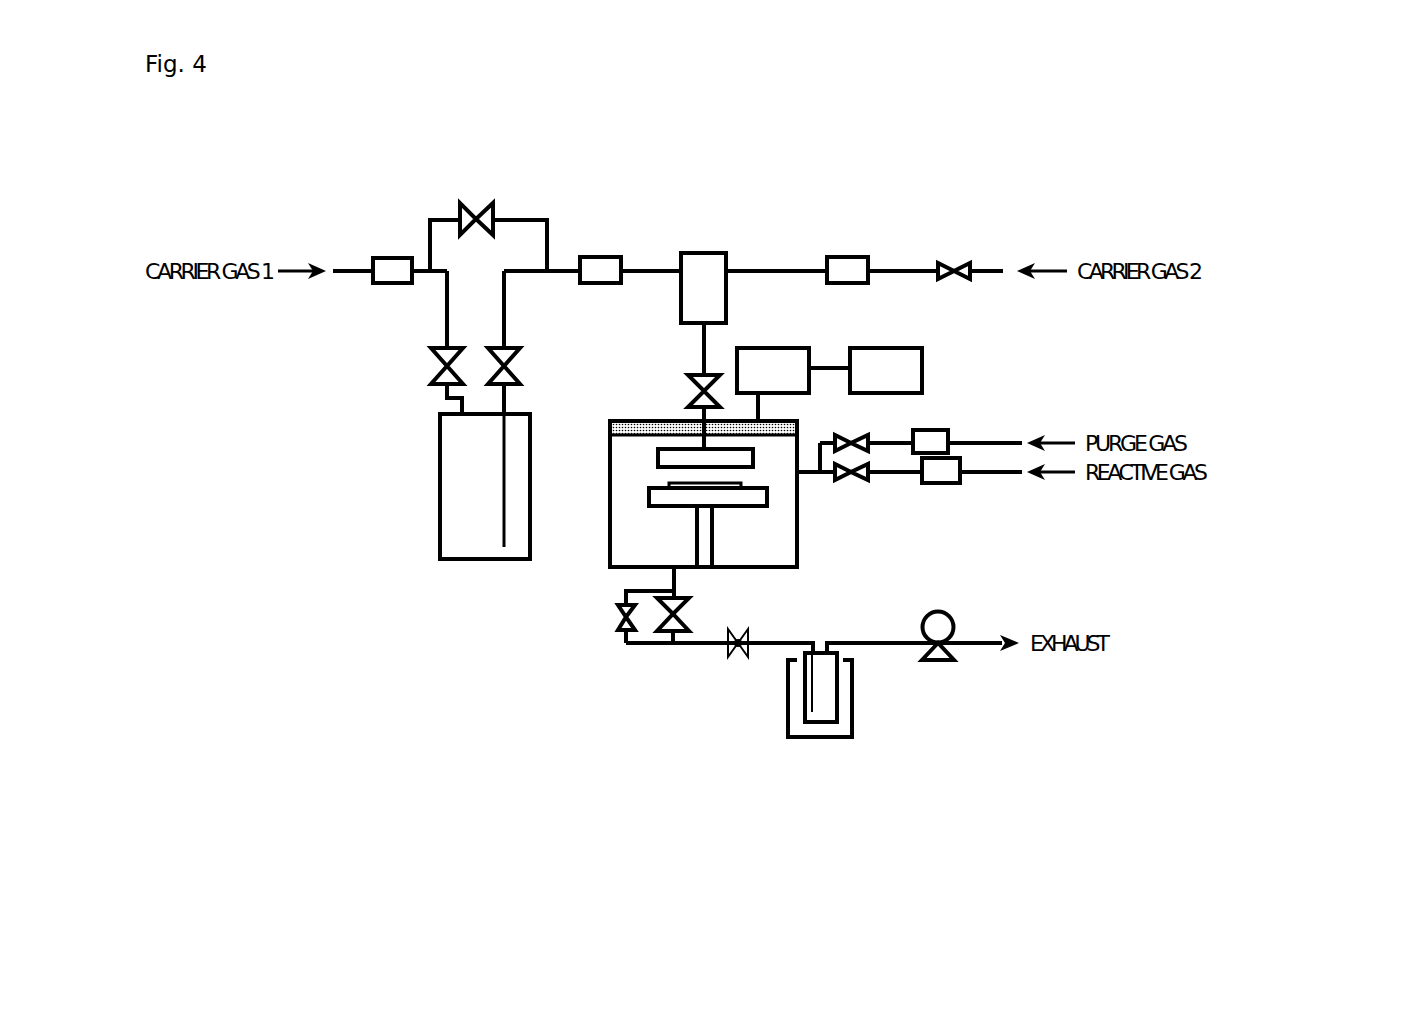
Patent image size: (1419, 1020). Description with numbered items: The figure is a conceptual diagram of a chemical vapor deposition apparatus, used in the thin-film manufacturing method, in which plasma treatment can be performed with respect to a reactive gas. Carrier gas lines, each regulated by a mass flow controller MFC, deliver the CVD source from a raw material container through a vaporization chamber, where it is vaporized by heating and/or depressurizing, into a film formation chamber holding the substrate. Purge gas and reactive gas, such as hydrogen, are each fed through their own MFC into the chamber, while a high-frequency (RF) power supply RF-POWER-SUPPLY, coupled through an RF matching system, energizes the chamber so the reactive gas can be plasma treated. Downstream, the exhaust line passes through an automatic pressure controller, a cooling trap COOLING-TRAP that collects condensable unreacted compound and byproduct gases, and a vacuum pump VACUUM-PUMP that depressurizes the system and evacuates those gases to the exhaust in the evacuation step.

The mass flow controller MFC is at (347, 183).
The high-frequency (RF) power supply RF-POWER-SUPPLY is at (922, 368).
The cooling trap COOLING-TRAP is at (828, 738).
The vacuum pump VACUUM-PUMP is at (947, 660).